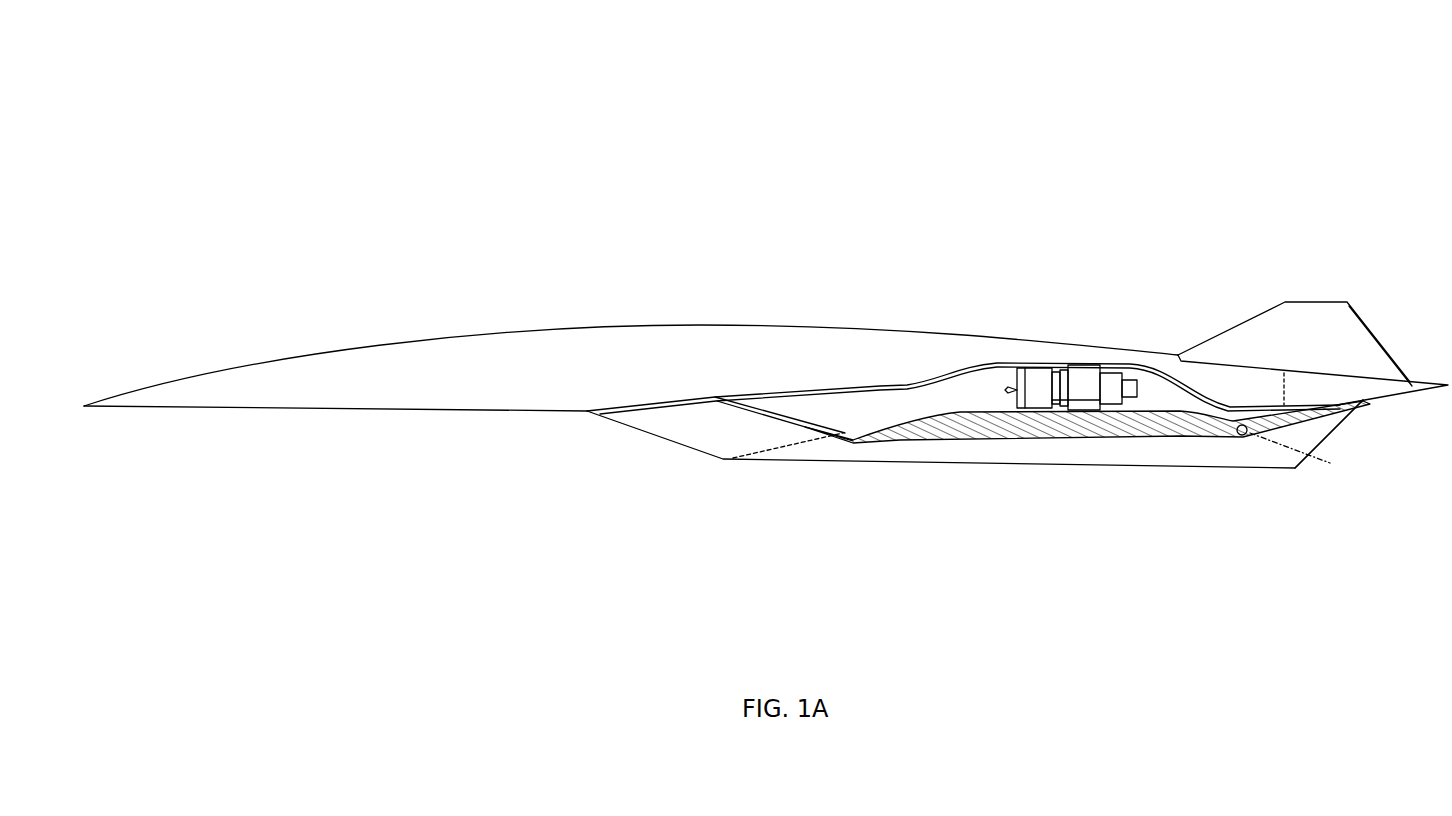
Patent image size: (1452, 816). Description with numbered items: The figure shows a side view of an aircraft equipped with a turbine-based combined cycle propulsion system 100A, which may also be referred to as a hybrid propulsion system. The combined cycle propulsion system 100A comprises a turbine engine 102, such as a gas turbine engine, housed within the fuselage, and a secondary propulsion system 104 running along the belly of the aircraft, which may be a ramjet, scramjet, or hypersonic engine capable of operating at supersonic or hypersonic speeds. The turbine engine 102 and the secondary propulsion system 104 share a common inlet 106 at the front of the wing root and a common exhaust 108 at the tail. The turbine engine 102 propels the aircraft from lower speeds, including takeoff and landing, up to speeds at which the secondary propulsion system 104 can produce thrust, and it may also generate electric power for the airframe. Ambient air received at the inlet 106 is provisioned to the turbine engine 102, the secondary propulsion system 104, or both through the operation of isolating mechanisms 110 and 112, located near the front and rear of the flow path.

The turbine-based combined cycle propulsion system 100A is at (262, 112).
The turbine engine 102 is at (1083, 385).
The secondary propulsion system 104 is at (1035, 448).
The common inlet 106 is at (723, 479).
The common exhaust 108 is at (1303, 490).
The isolating mechanism 110 is at (805, 428).
The isolating mechanism 112 is at (1253, 428).